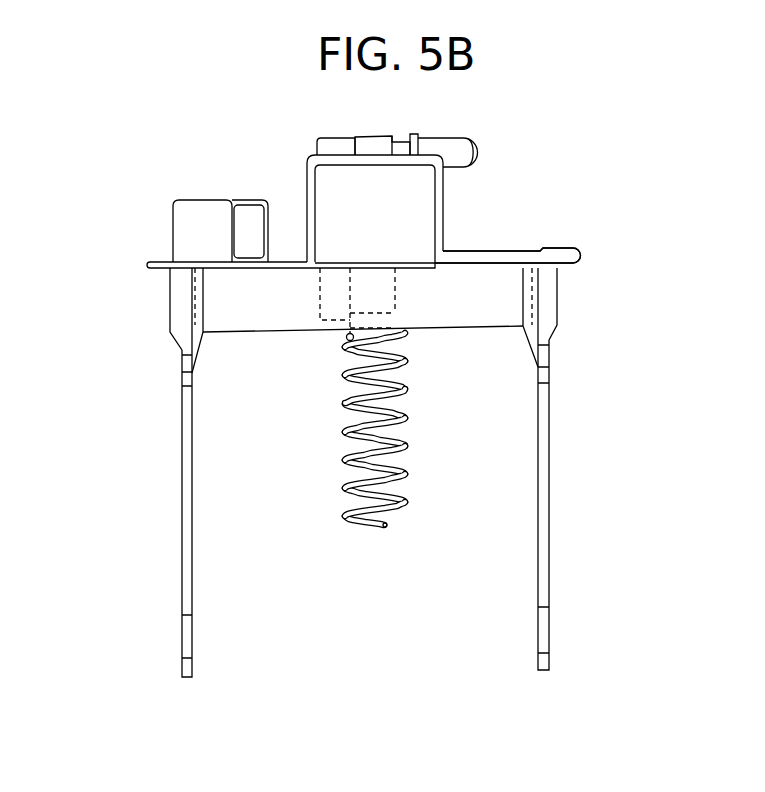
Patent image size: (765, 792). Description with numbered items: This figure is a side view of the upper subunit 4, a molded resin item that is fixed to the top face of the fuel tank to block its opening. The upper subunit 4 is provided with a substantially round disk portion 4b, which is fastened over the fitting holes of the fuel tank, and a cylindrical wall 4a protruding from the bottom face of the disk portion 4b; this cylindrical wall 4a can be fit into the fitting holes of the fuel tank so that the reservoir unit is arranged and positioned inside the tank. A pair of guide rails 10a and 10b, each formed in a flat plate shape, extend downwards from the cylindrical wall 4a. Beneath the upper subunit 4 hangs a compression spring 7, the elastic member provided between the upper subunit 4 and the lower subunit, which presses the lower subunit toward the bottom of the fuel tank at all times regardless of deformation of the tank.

The upper subunit 4 is at (388, 253).
The cylindrical wall 4a is at (547, 295).
The disk portion 4b is at (495, 252).
The compression spring 7 is at (408, 378).
The guide rail 10a is at (549, 445).
The guide rail 10b is at (182, 460).